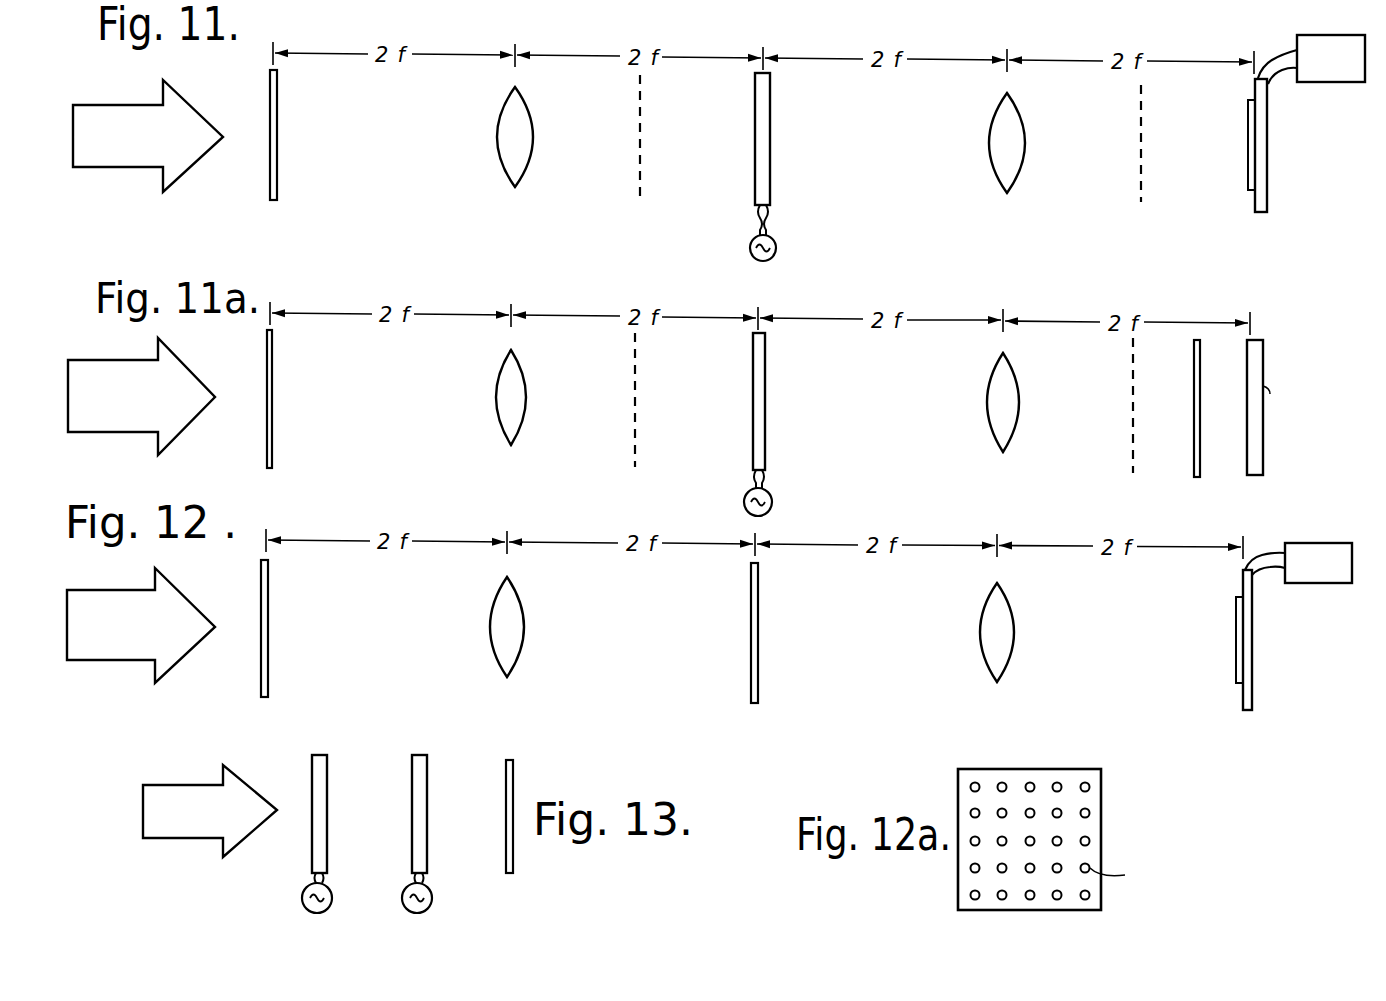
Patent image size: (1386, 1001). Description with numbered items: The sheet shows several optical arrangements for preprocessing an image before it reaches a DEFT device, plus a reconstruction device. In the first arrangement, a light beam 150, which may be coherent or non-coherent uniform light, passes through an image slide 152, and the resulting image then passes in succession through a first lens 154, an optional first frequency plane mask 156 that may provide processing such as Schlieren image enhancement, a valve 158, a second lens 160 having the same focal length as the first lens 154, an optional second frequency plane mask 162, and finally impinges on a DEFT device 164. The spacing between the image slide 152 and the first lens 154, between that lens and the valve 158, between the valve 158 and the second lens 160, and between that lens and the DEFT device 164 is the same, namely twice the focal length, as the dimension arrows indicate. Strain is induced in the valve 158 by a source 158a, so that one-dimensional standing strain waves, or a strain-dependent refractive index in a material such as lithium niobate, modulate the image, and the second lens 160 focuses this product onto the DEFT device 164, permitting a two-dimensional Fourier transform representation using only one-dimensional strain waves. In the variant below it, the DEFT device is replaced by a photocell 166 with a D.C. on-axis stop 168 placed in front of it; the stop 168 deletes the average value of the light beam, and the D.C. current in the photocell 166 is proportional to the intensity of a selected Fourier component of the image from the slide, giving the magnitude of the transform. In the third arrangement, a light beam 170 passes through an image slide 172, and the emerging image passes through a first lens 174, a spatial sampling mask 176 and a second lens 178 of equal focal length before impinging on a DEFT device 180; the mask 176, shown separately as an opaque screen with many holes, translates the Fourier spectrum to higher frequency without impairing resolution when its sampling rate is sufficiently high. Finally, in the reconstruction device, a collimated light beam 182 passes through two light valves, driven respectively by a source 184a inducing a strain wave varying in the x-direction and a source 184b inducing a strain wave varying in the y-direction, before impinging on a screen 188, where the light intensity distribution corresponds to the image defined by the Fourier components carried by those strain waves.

In FIG. 11, the light beam 150 is at (95, 167).
In FIG. 11A, the light beam 150 is at (95, 432).
In FIG. 11, the image slide 152 is at (277, 170).
In FIG. 11, the first lens 154 is at (522, 143).
In FIG. 11, the first frequency plane mask 156 is at (641, 152).
In FIG. 11, the valve 158 is at (770, 165).
In FIG. 11, the source 158a is at (776, 243).
In FIG. 11A, the source 158a is at (772, 502).
In FIG. 11, the second lens 160 is at (1012, 162).
In FIG. 11, the second frequency plane mask 162 is at (1143, 165).
In FIG. 11A, the second frequency plane mask 162 is at (1135, 452).
In FIG. 11, the DEFT device 164 is at (1267, 175).
In FIG. 11A, the photocell 166 is at (1263, 445).
In FIG. 11A, the D.C. on-axis stop 168 is at (1200, 442).
In FIG. 12, the light beam 170 is at (90, 660).
In FIG. 12, the image slide 172 is at (268, 655).
In FIG. 12, the first lens 174 is at (512, 648).
In FIG. 12, the spatial sampling mask 176 is at (758, 672).
In FIG. 12A, the spatial sampling mask 176 is at (1101, 790).
In FIG. 12, the second lens 178 is at (1005, 652).
In FIG. 12, the DEFT device 180 is at (1252, 695).
In FIG. 13, the light beam 182 is at (172, 838).
In FIG. 13, the source 184a is at (330, 890).
In FIG. 13, the source 184b is at (430, 890).
In FIG. 13, the screen 188 is at (513, 830).